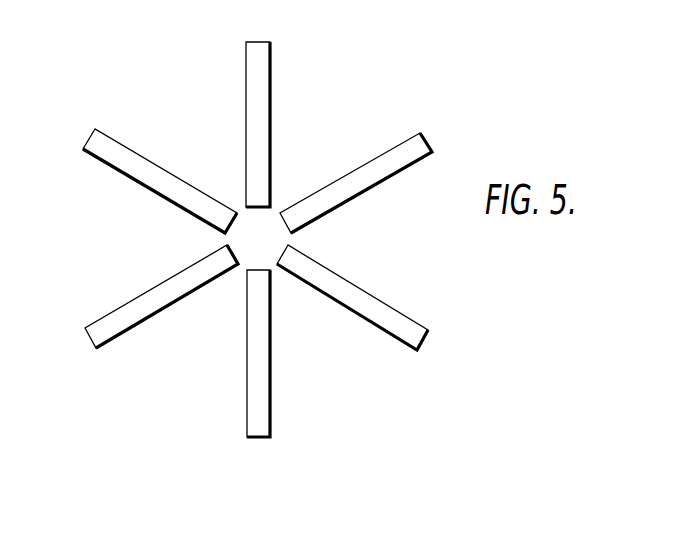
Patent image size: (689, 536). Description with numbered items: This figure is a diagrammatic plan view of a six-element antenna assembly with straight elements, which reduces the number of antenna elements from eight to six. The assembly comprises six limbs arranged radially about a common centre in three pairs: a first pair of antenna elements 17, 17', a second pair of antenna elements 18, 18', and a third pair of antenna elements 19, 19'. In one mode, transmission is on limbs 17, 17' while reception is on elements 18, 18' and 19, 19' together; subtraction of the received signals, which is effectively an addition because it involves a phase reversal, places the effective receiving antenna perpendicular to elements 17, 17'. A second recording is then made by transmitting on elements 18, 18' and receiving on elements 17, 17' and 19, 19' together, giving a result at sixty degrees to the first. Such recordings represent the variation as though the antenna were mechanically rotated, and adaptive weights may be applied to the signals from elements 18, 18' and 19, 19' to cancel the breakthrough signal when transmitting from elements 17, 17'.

The antenna element 17 is at (276, 121).
The antenna element 17' is at (262, 378).
The antenna element 18 is at (372, 179).
The antenna element 18' is at (137, 300).
The antenna element 19 is at (369, 302).
The antenna element 19' is at (137, 178).